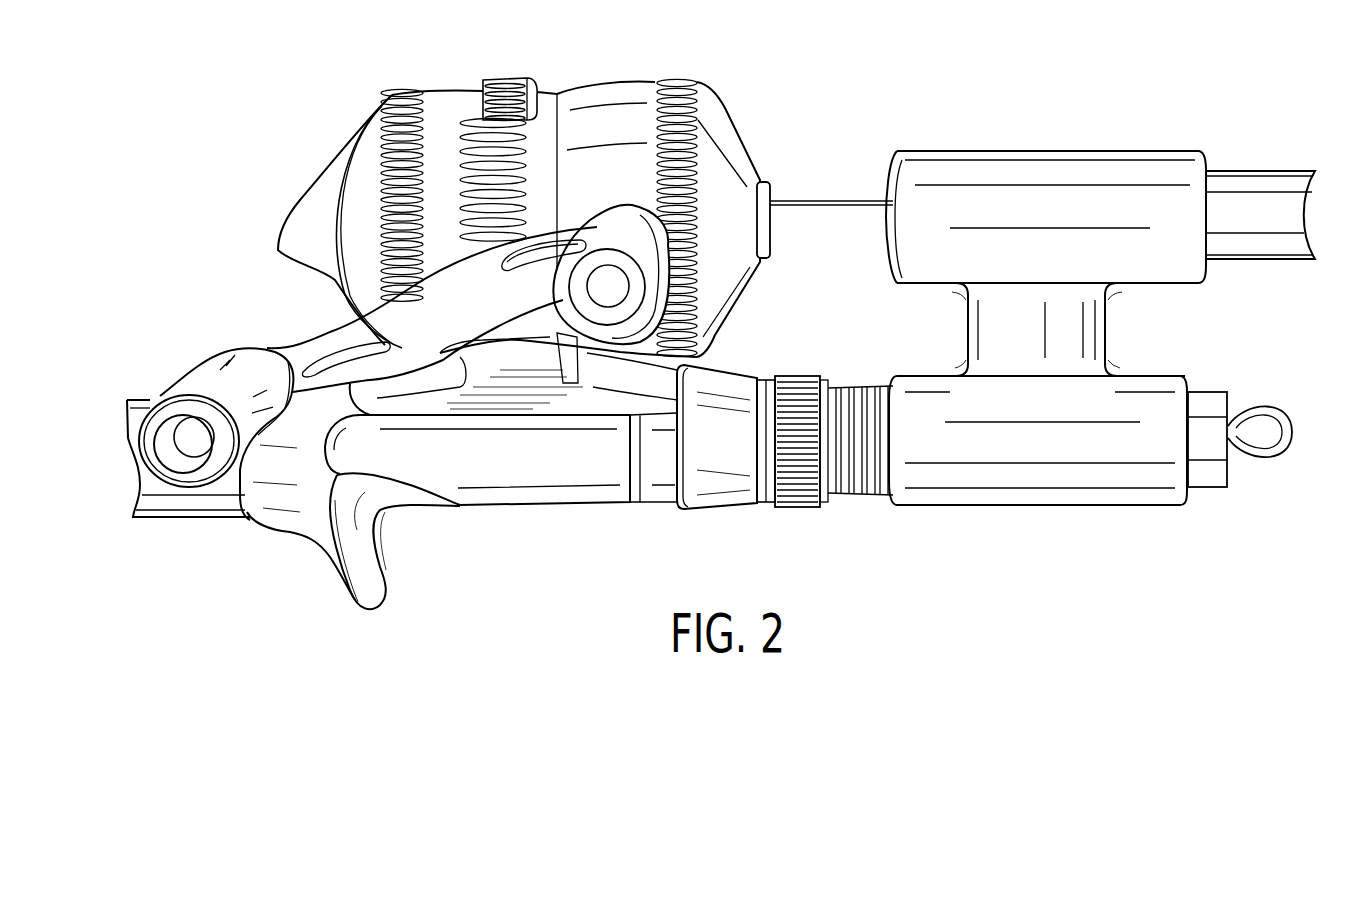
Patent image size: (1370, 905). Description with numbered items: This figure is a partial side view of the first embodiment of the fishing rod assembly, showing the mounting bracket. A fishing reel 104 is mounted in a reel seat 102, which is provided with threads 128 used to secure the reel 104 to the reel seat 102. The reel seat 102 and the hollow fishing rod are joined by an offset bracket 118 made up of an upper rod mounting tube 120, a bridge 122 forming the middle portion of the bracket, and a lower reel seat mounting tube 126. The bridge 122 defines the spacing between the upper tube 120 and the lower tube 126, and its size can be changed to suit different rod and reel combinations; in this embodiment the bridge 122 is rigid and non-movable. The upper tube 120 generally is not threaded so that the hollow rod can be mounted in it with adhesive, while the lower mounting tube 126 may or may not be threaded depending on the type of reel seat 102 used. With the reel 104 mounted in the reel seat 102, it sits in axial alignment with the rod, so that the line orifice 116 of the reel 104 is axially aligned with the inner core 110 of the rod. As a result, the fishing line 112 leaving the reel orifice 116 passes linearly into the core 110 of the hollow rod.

The reel seat 102 is at (533, 453).
The fishing reel 104 is at (452, 115).
The inner core 110 is at (889, 241).
The fishing line 112 is at (818, 200).
The line orifice 116 is at (778, 190).
The offset bracket 118 is at (1200, 342).
The upper rod mounting tube 120 is at (1125, 160).
The bridge 122 is at (967, 330).
The lower reel seat mounting tube 126 is at (945, 484).
The threads 128 is at (881, 492).